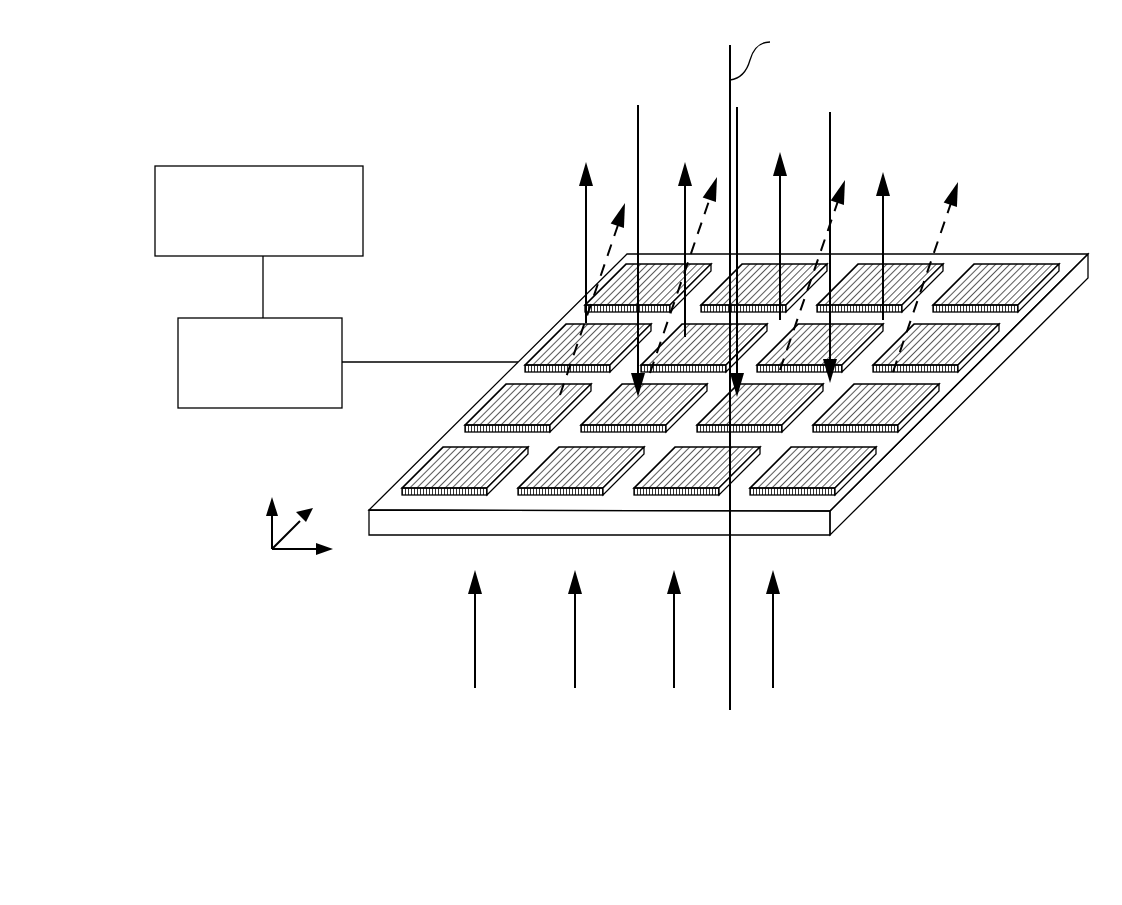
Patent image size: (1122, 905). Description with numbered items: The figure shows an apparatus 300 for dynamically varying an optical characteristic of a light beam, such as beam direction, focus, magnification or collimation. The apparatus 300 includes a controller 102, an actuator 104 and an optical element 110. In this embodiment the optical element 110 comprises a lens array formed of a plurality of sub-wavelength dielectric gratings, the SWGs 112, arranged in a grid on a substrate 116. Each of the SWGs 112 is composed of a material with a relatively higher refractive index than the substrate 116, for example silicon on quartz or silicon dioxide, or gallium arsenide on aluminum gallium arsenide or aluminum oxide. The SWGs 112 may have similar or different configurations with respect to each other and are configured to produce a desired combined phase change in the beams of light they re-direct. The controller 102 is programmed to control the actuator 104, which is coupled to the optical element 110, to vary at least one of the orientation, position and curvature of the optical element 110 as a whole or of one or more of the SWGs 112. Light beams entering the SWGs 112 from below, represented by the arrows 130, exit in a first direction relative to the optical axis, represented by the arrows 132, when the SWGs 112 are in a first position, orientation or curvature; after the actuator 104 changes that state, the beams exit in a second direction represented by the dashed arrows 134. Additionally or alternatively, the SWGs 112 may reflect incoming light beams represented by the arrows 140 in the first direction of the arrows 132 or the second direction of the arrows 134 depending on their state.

The apparatus 300 is at (388, 65).
The controller 102 is at (259, 211).
The actuator 104 is at (260, 363).
The optical element 110 is at (530, 236).
The sub-wavelength dielectric grating (SWG) 112 is at (917, 404).
The substrate 116 is at (923, 440).
The arrows 130 is at (773, 635).
The arrows 132 is at (885, 202).
The arrows 134 is at (942, 230).
The arrows 140 is at (638, 160).